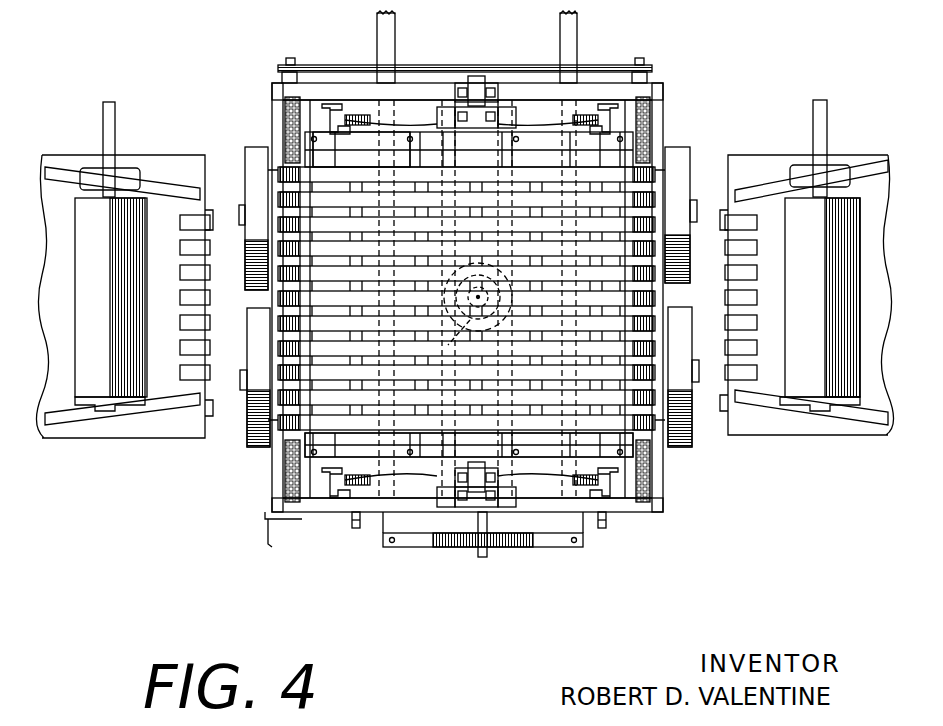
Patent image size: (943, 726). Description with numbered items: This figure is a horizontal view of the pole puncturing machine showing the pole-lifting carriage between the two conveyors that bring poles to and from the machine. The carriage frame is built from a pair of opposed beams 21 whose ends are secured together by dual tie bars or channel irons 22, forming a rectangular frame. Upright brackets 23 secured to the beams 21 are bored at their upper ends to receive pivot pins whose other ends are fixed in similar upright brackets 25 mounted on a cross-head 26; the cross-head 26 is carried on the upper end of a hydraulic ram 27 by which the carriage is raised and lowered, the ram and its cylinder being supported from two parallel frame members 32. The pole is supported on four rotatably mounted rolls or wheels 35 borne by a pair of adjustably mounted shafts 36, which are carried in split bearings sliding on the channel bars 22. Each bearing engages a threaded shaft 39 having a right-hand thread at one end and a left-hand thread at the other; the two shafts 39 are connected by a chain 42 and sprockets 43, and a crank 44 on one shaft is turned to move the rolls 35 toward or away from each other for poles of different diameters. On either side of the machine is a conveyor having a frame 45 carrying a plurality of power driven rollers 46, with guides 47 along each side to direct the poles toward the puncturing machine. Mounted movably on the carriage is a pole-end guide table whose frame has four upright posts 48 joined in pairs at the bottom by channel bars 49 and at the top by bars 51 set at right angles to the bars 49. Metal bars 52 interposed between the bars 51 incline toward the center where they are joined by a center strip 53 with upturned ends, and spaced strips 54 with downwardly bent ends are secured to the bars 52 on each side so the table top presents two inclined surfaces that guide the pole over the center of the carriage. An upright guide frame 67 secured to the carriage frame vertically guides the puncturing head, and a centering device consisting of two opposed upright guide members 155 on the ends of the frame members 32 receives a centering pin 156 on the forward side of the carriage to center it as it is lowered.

The opposed beams 21 is at (412, 92).
The dual tie bars or channel irons 22 is at (272, 92).
The upright brackets 23 is at (478, 88).
The upright brackets 25 is at (498, 117).
The cross-head 26 is at (455, 155).
The ram 27 is at (446, 348).
The parallel frame members 32 is at (396, 36).
The rotatably mounted rolls or wheels 35 is at (245, 150).
The adjustably mounted shafts 36 is at (698, 215).
The threaded shaft 39 is at (285, 122).
The chain 42 is at (325, 65).
The sprockets 43 is at (289, 58).
The crank 44 is at (265, 545).
The conveyor frame 45 is at (160, 440).
The power driven rollers 46 is at (97, 375).
The guides 47 is at (190, 410).
The upright posts 48 is at (612, 116).
The channel bars 49 is at (350, 488).
The bars 51 is at (372, 460).
The metal bars 52 is at (400, 153).
The center strip or bar 53 is at (580, 300).
The strips 54 is at (657, 188).
The upright guide frame 67 is at (358, 530).
The upright guide members 155 is at (455, 548).
The centering pin 156 is at (484, 558).